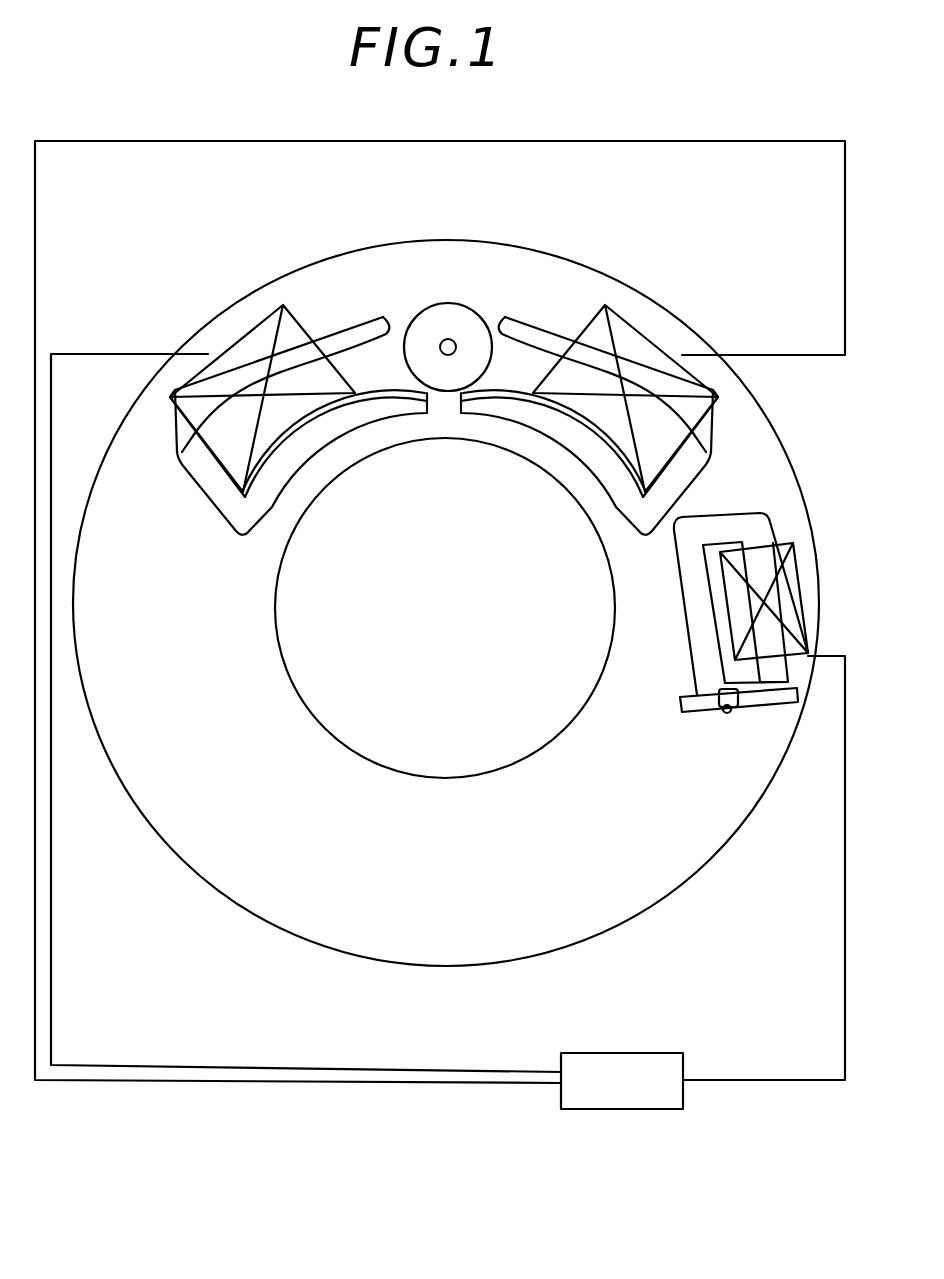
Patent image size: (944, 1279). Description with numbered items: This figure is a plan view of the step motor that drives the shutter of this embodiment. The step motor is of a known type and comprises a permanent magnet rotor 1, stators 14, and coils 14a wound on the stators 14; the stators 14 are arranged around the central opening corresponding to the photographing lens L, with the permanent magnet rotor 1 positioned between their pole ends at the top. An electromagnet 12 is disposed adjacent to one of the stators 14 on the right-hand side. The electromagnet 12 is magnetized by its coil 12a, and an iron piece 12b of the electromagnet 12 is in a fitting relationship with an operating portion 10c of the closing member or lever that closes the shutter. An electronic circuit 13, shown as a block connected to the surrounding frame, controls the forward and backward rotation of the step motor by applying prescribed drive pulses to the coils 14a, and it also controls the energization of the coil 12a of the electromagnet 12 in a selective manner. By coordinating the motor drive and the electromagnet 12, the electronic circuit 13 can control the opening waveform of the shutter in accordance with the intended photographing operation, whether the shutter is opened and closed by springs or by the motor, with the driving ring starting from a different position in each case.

The permanent magnet rotor 1 is at (462, 305).
The operating portion 10c is at (724, 712).
The electromagnet 12 is at (753, 528).
The coil 12a is at (804, 563).
The iron piece 12b is at (803, 663).
The electronic circuit 13 is at (648, 1090).
The stator 14 is at (363, 323).
The coil 14a is at (268, 322).
The photographing lens L is at (458, 603).